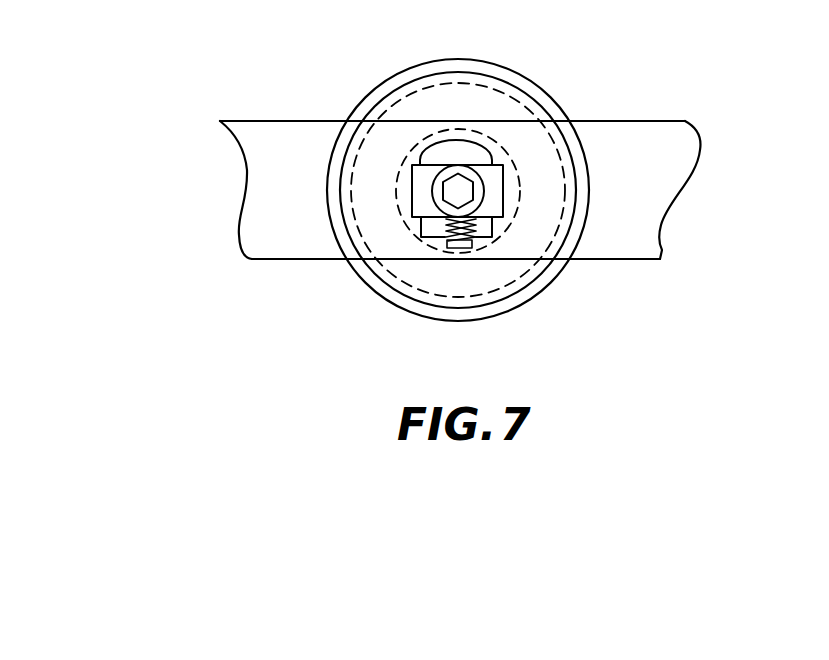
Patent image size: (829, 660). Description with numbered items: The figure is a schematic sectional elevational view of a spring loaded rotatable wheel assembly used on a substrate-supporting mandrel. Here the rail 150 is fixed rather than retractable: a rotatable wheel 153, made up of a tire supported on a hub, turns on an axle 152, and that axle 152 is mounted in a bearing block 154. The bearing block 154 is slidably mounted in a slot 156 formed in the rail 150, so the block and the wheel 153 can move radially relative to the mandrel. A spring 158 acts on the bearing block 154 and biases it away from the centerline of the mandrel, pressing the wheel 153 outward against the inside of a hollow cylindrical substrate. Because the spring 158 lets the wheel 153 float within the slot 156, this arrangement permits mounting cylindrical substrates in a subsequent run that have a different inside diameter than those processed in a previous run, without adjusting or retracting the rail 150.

The rail 150 is at (633, 121).
The axle 152 is at (458, 191).
The rotatable wheel 153 is at (489, 62).
The bearing block 154 is at (503, 180).
The slot 156 is at (461, 148).
The spring 158 is at (468, 223).